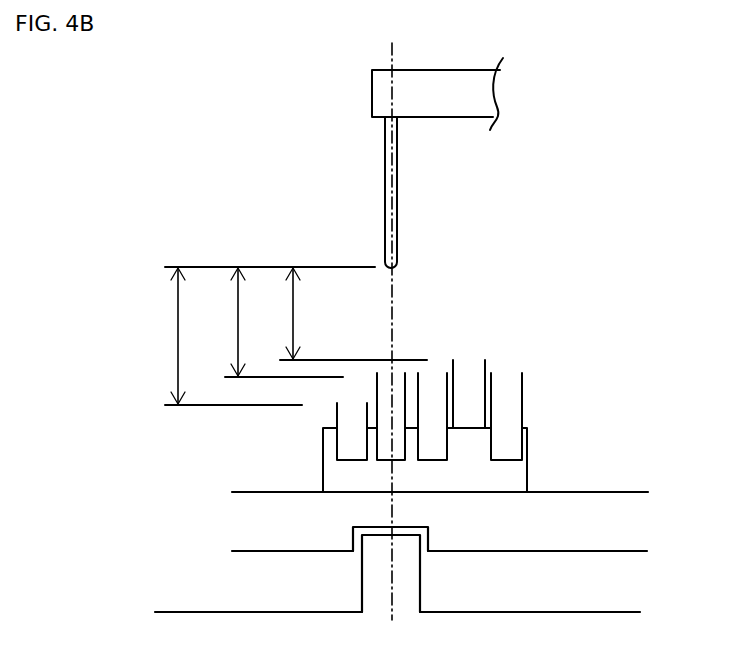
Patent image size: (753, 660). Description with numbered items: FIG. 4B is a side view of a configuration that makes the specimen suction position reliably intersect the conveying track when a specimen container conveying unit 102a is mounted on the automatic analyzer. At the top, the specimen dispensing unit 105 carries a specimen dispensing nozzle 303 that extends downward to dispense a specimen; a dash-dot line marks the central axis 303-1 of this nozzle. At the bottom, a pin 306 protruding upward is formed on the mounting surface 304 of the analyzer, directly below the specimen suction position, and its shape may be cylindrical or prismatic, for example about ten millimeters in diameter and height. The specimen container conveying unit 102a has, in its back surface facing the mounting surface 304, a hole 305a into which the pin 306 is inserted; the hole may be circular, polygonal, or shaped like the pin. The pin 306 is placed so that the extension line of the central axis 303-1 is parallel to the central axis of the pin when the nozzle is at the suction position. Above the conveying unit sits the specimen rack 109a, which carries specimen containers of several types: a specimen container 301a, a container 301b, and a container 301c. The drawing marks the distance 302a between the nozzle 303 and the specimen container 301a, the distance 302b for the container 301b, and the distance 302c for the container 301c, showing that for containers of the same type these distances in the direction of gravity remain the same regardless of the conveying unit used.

The specimen dispensing unit 105 is at (470, 100).
The specimen dispensing nozzle 303 is at (385, 222).
The central axis of the specimen dispensing nozzle 303-1 is at (395, 200).
The distance 302a is at (167, 323).
The distance 302b is at (235, 322).
The distance 302c is at (290, 330).
The specimen container 301a is at (353, 413).
The container 301b is at (383, 437).
The container 301c is at (473, 375).
The specimen rack 109a is at (527, 475).
The specimen container conveying unit 102a is at (603, 532).
The hole 305a is at (353, 538).
The mounting surface 304 is at (607, 620).
The pin 306 is at (372, 581).